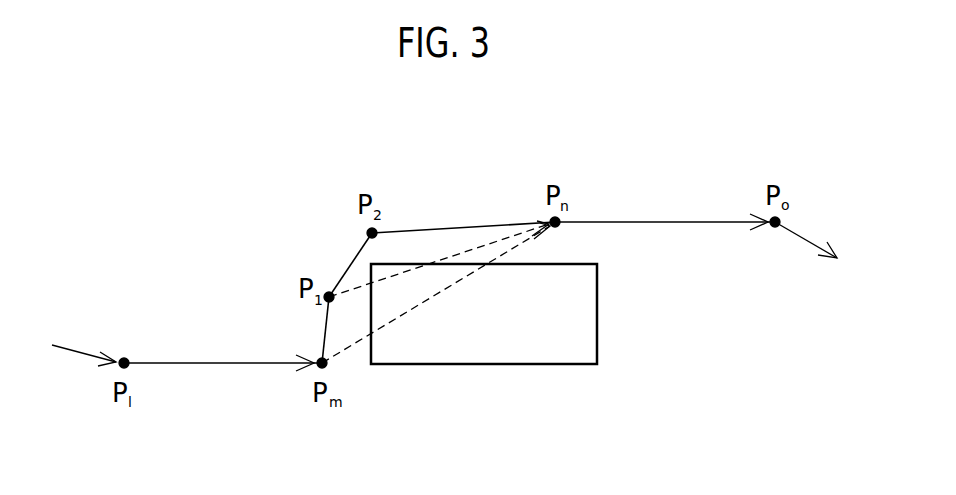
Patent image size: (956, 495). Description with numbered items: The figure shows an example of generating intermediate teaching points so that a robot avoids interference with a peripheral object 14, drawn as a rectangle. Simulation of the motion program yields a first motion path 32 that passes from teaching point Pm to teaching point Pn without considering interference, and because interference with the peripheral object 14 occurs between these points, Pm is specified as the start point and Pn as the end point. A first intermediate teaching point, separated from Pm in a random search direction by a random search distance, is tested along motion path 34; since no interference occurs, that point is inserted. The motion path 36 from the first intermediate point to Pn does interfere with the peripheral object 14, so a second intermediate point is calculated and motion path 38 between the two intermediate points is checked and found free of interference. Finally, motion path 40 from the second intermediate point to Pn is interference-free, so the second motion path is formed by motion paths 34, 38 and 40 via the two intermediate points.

The peripheral object 14 is at (597, 310).
The first motion path 32 is at (453, 282).
The motion path 34 is at (325, 333).
The motion path 36 is at (383, 278).
The motion path 38 is at (341, 262).
The motion path 40 is at (448, 228).